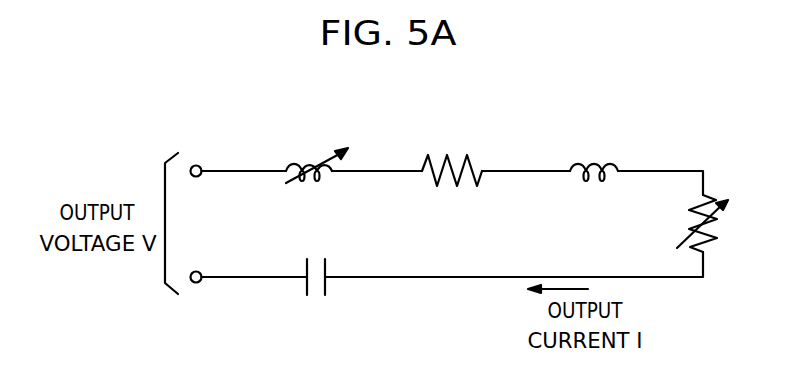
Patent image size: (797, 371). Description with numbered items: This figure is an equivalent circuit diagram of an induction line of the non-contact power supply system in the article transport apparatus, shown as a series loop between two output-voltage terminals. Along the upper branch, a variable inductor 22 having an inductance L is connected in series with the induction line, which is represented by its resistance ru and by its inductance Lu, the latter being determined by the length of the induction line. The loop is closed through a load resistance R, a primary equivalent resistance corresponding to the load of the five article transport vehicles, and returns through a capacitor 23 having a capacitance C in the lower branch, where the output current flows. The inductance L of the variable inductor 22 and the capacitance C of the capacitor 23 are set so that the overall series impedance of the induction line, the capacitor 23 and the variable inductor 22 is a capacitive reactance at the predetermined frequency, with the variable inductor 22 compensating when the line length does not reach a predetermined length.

The variable inductor 22 is at (272, 140).
The capacitor 23 is at (275, 270).
The inductance of the variable inductor L is at (317, 155).
The capacitance of the capacitor C is at (316, 293).
The resistance ru is at (452, 156).
The inductance of the induction line Lu is at (594, 154).
The load resistance R is at (710, 223).